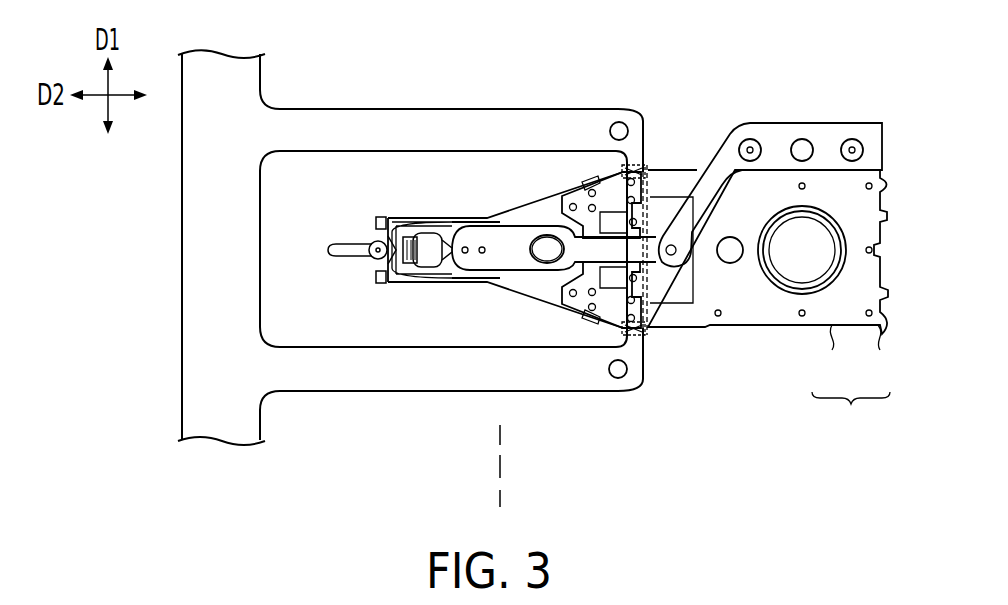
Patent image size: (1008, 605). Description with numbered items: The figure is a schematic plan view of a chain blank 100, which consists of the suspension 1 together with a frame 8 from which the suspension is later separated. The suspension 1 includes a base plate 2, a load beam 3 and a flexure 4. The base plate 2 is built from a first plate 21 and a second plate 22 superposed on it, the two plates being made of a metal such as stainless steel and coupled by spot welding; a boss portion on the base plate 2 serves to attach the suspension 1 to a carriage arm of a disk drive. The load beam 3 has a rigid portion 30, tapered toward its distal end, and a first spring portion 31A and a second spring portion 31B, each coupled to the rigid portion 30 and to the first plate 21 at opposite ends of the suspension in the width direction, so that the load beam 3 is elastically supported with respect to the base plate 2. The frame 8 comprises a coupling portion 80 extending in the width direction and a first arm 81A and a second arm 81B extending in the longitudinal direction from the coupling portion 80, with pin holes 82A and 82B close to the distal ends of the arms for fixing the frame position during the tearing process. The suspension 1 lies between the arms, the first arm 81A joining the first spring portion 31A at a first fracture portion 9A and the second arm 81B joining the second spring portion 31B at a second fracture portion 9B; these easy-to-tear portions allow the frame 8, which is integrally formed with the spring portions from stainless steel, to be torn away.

The chain blank 100 is at (675, 56).
The suspension 1 is at (748, 334).
The base plate 2 is at (851, 412).
The first plate 21 is at (832, 327).
The second plate 22 is at (880, 327).
The load beam 3 is at (572, 252).
The rigid portion 30 is at (510, 217).
The first spring portion 31A is at (605, 330).
The second spring portion 31B is at (605, 180).
The flexure 4 is at (766, 122).
The frame 8 is at (384, 272).
The coupling portion 80 is at (182, 247).
The first arm 81A is at (410, 392).
The second arm 81B is at (410, 108).
The pin hole 82A is at (618, 379).
The pin hole 82B is at (617, 122).
The first fracture portion 9A is at (646, 340).
The second fracture portion 9B is at (646, 162).